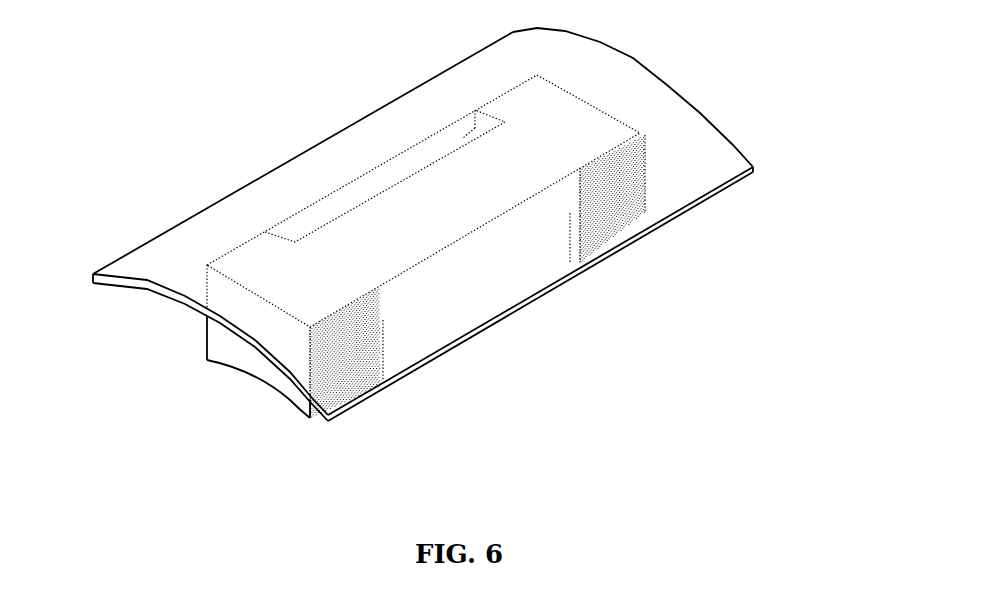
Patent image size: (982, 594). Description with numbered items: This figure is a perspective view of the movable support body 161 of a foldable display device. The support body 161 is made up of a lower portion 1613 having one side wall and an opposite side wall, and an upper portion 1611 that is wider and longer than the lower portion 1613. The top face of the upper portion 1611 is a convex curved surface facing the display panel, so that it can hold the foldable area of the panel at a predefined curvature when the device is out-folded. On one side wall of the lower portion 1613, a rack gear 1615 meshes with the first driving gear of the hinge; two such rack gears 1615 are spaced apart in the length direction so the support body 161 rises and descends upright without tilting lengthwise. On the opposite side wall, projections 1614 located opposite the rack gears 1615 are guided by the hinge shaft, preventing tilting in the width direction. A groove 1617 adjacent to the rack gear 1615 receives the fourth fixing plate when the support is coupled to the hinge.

The support body 161 is at (167, 50).
The upper portion 1611 is at (669, 103).
The lower portion 1613 is at (572, 103).
The projection 1614 is at (503, 84).
The rack gear 1615 is at (656, 222).
The groove 1617 is at (572, 272).